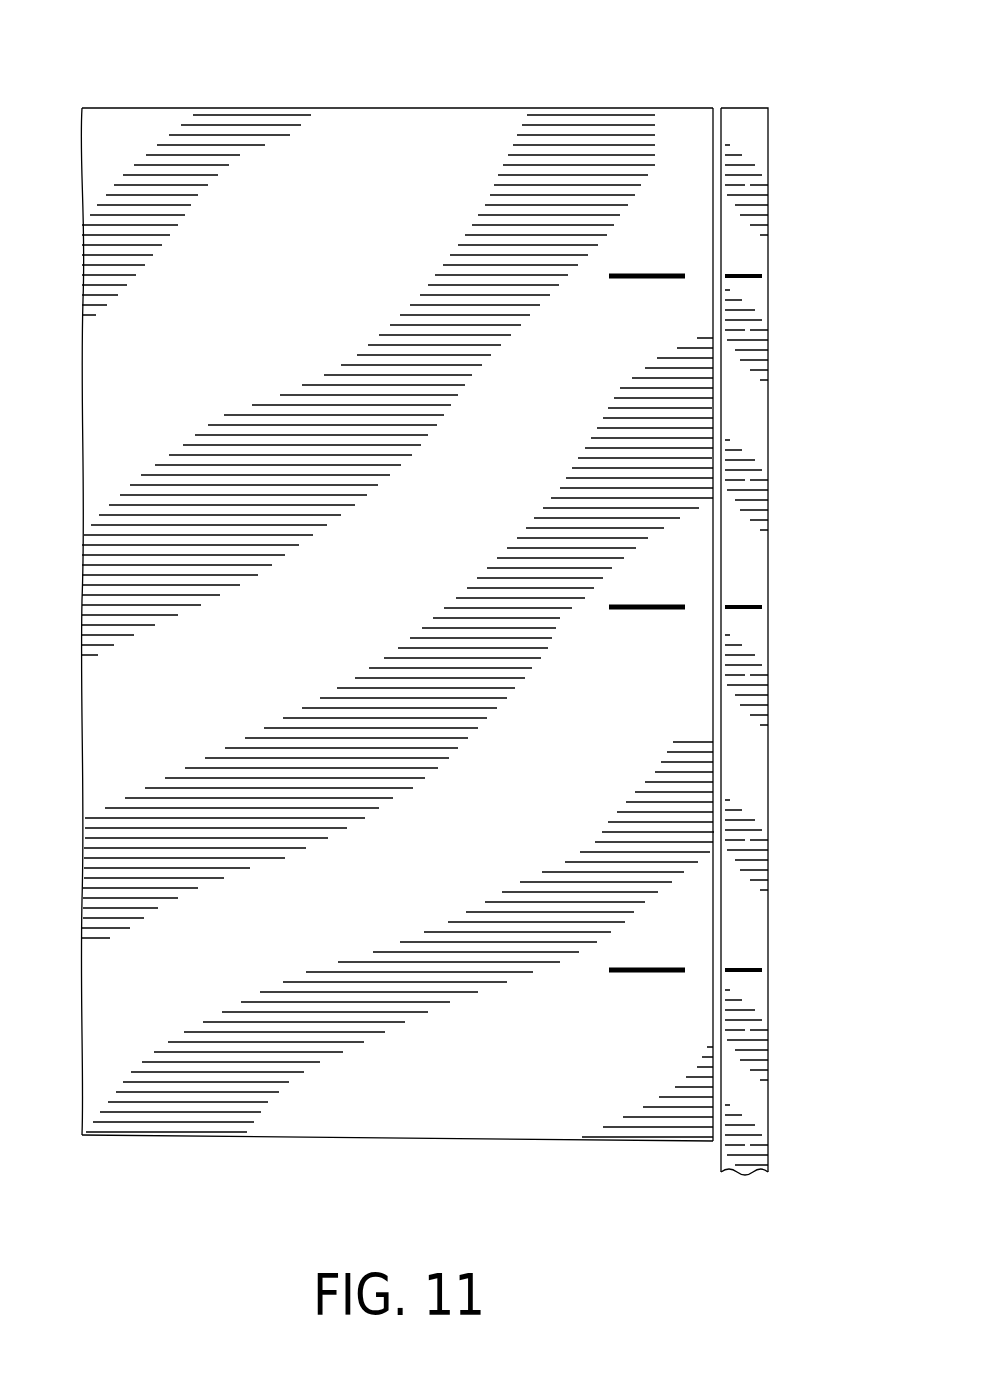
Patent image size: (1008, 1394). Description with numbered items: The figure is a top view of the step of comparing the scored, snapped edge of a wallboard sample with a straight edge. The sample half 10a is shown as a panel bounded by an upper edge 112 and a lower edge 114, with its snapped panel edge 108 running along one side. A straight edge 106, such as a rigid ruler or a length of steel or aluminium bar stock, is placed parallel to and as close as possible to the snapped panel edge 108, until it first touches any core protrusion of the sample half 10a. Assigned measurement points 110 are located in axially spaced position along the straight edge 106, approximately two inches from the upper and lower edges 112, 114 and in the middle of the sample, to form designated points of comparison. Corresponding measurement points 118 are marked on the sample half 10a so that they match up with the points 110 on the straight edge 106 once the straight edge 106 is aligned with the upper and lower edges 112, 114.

The sample half 10a is at (343, 193).
The straight edge 106 is at (760, 138).
The snapped panel edge 108 is at (713, 138).
The assigned measurement points 110 is at (745, 272).
The upper edge 112 is at (445, 107).
The lower edge 114 is at (277, 1138).
The corresponding measurement points 118 is at (645, 280).